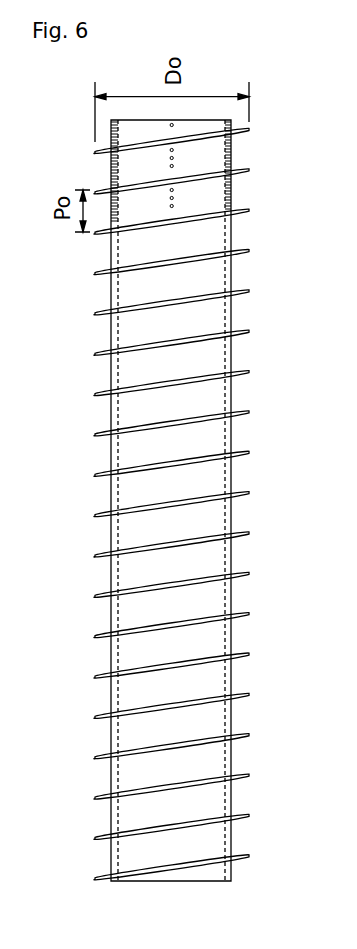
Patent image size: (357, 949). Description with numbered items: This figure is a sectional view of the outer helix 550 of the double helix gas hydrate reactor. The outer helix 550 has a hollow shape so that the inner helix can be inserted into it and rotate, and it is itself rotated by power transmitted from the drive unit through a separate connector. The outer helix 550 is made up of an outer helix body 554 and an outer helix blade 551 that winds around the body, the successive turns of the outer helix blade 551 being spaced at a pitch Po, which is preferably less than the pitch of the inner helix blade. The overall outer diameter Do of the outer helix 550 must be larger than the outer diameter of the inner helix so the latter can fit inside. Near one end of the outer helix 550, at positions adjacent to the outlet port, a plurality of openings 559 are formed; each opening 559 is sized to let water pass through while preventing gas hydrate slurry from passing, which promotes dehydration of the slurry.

The outer helix 550 is at (176, 523).
The outer helix blade 551 is at (250, 817).
The outer helix body 554 is at (208, 503).
The openings 559 is at (300, 186).